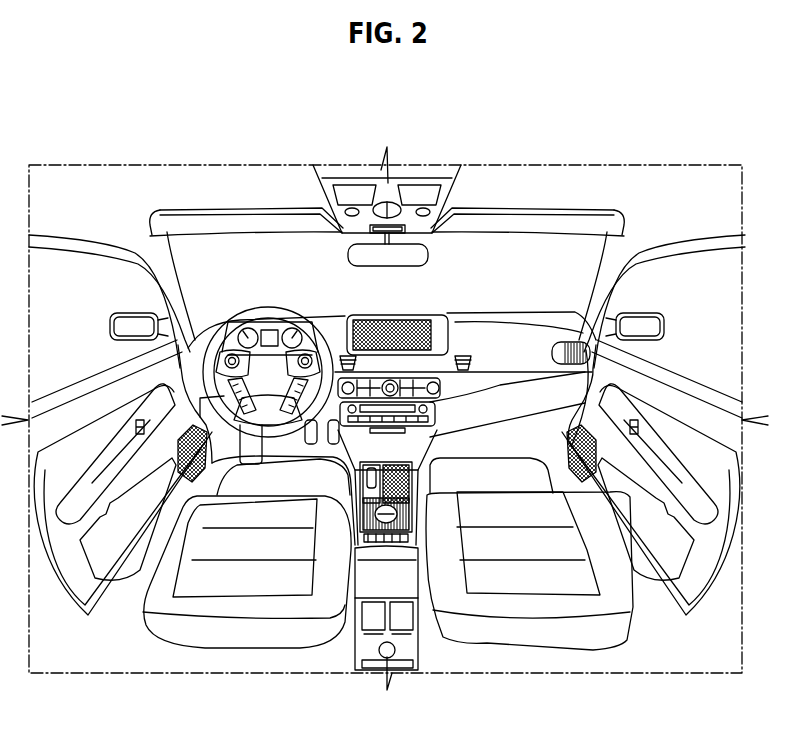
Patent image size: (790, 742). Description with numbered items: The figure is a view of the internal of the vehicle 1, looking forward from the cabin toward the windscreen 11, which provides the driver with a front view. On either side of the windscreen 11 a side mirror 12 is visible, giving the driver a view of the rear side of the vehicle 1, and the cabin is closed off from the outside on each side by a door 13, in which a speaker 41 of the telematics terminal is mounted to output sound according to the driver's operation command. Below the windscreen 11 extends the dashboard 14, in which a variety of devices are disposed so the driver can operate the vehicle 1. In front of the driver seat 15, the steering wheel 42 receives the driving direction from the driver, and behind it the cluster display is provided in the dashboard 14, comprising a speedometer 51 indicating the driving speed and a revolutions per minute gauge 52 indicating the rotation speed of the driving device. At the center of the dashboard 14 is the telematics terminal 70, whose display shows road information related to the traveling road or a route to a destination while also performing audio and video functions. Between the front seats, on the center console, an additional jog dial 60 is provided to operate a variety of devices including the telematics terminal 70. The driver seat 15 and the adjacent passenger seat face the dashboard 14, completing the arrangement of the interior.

The vehicle 1 is at (118, 156).
The windscreen 11 is at (222, 241).
The side mirror 12 is at (110, 327).
The door 13 is at (52, 480).
The dashboard 14 is at (525, 341).
The driver seat 15 is at (240, 641).
The speaker 41 is at (176, 451).
The steering wheel 42 is at (323, 338).
The speedometer 51 is at (234, 334).
The revolutions per minute (RPM) gauge 52 is at (280, 347).
The jog dial 60 is at (395, 501).
The telematics terminal 70 is at (424, 318).